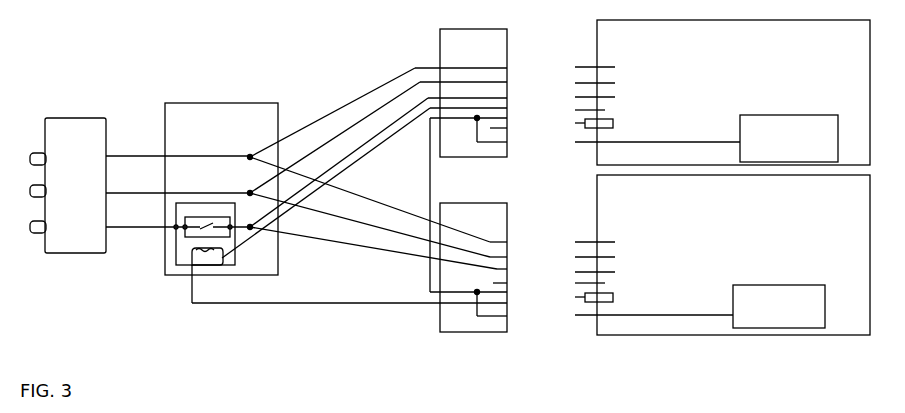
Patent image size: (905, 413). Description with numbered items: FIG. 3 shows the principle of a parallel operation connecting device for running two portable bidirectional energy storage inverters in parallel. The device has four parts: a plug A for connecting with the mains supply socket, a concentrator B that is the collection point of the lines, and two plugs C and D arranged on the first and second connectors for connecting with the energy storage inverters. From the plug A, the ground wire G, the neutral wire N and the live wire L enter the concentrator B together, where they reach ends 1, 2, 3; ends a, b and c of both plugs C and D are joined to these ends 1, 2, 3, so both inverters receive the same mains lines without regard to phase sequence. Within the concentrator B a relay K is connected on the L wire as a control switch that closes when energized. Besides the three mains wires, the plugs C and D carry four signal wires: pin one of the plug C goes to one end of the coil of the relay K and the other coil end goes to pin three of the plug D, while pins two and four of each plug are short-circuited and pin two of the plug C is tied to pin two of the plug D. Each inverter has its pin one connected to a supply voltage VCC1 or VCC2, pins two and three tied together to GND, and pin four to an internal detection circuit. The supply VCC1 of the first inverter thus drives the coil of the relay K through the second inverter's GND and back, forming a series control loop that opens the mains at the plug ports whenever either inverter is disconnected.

The plug A is at (68, 185).
The concentrator B is at (221, 205).
The plug C is at (473, 93).
The plug D is at (480, 267).
The relay K is at (228, 262).
The ground wire G is at (178, 145).
The neutral wire N is at (178, 183).
The live wire L is at (178, 217).
The end 1 is at (246, 150).
The end 2 is at (246, 186).
The end 3 is at (245, 221).
The VCC VCC1 is at (641, 109).
The VCC VCC2 is at (640, 283).
The ground GND is at (639, 126).